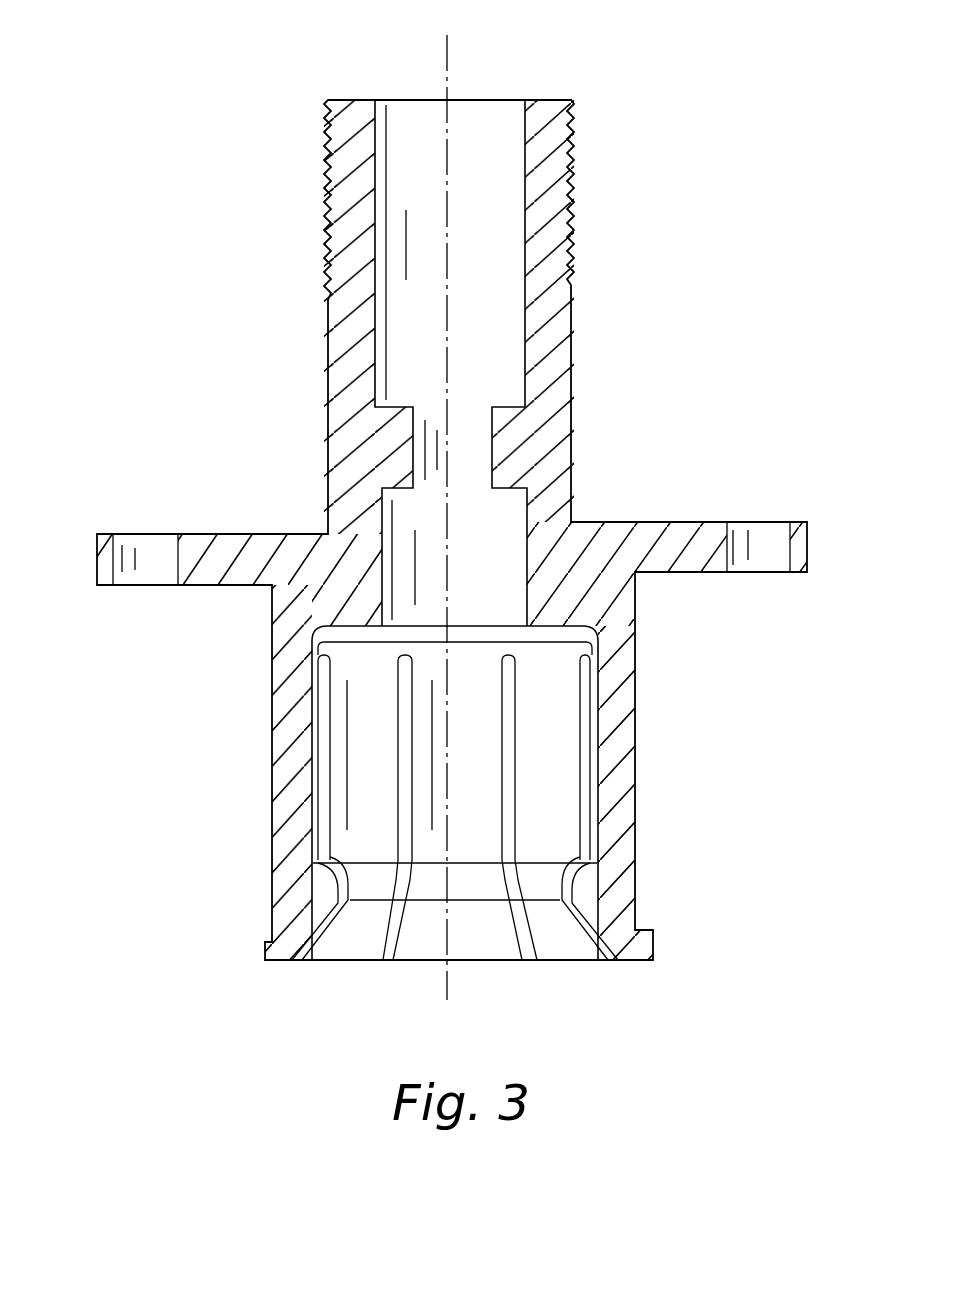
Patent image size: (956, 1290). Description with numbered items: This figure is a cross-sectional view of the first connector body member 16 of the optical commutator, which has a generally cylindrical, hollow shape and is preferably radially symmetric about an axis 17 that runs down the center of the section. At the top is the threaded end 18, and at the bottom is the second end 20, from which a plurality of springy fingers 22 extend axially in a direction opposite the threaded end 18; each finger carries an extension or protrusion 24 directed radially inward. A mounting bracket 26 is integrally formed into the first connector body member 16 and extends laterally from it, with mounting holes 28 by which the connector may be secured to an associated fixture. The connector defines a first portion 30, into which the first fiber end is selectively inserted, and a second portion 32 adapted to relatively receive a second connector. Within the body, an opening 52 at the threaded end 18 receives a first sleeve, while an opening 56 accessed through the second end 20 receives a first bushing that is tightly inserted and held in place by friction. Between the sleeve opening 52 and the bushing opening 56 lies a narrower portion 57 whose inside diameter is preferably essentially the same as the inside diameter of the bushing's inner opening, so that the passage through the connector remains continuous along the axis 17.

The first connector body member 16 is at (135, 180).
The axis 17 is at (448, 72).
The threaded end 18 is at (574, 212).
The second end 20 is at (700, 810).
The springy fingers 22 is at (345, 955).
The extension or protrusion 24 is at (368, 883).
The mounting bracket 26 is at (210, 500).
The mounting holes 28 is at (148, 578).
The first portion 30 is at (665, 185).
The second portion 32 is at (712, 727).
The opening 52 is at (415, 115).
The opening 56 is at (505, 517).
The portion 57 is at (433, 450).